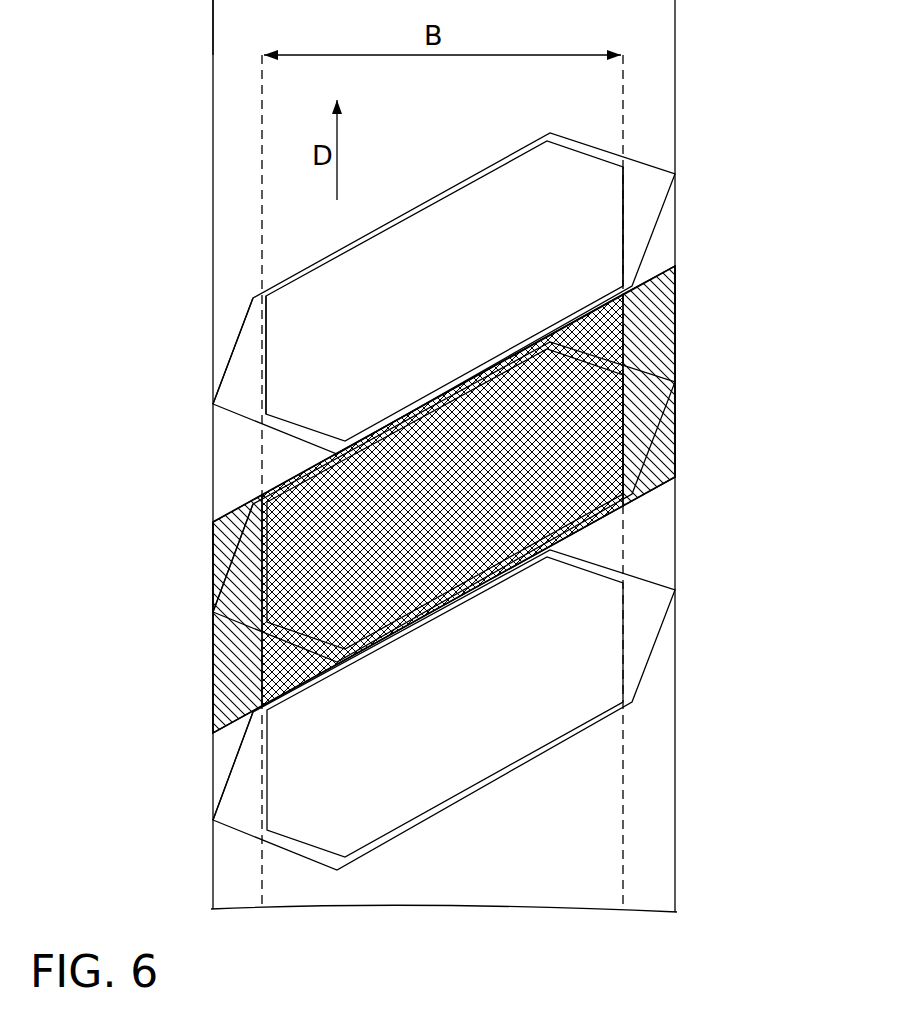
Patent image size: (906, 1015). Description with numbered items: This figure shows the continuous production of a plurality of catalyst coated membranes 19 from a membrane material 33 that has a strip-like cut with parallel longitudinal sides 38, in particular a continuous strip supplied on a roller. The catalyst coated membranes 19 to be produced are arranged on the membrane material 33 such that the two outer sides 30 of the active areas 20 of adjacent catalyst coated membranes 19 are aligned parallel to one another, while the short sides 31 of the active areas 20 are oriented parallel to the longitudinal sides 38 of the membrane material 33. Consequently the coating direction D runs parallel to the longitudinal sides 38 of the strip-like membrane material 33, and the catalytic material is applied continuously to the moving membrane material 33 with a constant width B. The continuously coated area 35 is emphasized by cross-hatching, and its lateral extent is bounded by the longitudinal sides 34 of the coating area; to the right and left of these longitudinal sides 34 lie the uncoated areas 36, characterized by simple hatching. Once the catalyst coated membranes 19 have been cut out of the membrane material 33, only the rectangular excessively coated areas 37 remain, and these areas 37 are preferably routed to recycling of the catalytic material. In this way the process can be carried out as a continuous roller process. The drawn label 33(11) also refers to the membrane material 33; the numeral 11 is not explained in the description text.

The material strip 11 is at (425, 456).
The membrane material 33 is at (245, 31).
The longitudinal sides of the coating area 34 is at (628, 72).
The longitudinal sides 38 is at (680, 149).
The active area 20 is at (457, 306).
The outer sides 30 is at (367, 244).
The short sides 31 is at (618, 212).
The catalyst coated membrane 19 is at (241, 378).
The excessively coated areas 37 is at (607, 333).
The continuously coated area 35 is at (525, 500).
The uncoated area 36 is at (501, 499).